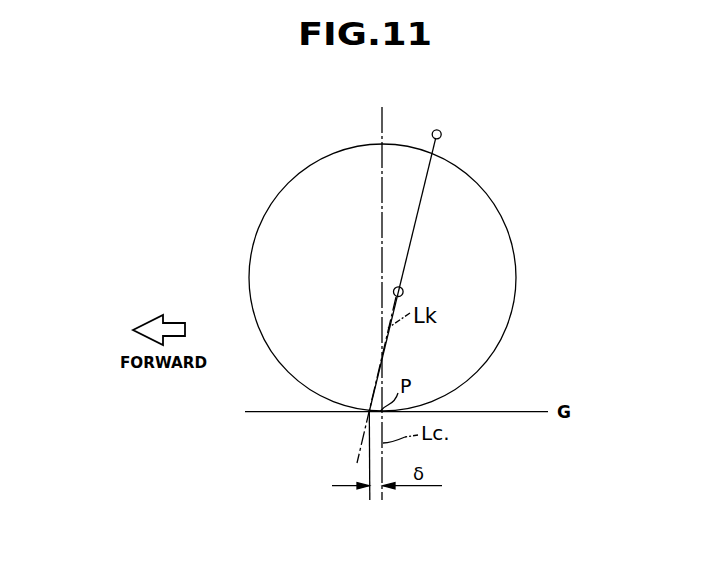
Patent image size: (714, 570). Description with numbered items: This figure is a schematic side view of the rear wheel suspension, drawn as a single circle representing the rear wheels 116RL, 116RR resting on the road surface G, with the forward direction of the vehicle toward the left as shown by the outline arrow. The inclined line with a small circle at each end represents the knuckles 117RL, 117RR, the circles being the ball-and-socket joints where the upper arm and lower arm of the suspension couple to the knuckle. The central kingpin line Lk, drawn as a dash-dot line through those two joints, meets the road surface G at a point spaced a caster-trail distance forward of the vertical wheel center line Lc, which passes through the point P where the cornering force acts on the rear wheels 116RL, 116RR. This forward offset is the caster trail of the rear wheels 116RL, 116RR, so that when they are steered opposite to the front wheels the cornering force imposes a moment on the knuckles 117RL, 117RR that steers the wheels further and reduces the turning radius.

The rear wheel 116RL is at (446, 277).
The rear wheel 116RR is at (493, 347).
The knuckle 117RL is at (500, 271).
The knuckle 117RR is at (422, 196).